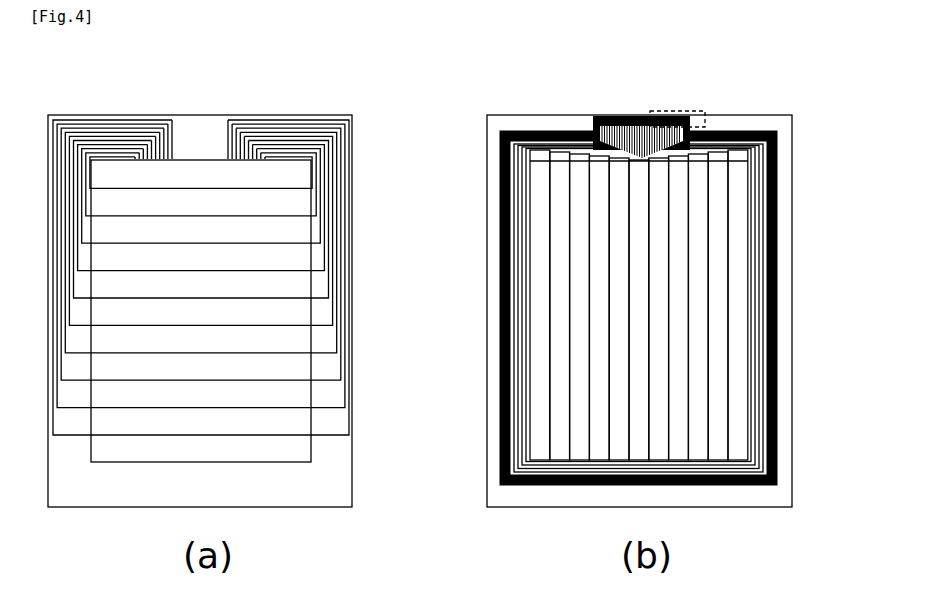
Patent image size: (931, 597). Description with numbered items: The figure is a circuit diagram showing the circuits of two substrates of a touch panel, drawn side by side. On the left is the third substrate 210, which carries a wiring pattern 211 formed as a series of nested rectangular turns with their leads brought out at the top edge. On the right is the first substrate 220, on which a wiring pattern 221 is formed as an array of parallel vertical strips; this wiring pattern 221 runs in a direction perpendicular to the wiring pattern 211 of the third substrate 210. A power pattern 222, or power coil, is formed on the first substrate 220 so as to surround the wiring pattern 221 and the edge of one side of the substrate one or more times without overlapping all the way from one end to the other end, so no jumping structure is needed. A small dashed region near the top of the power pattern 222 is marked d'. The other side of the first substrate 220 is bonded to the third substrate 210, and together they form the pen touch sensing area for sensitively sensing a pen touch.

The third substrate 210 is at (93, 122).
The wiring pattern 211 is at (262, 108).
The first substrate 220 is at (534, 118).
The wiring pattern 221 is at (681, 445).
The power pattern 222 is at (777, 446).
The gap distance d' is at (705, 95).